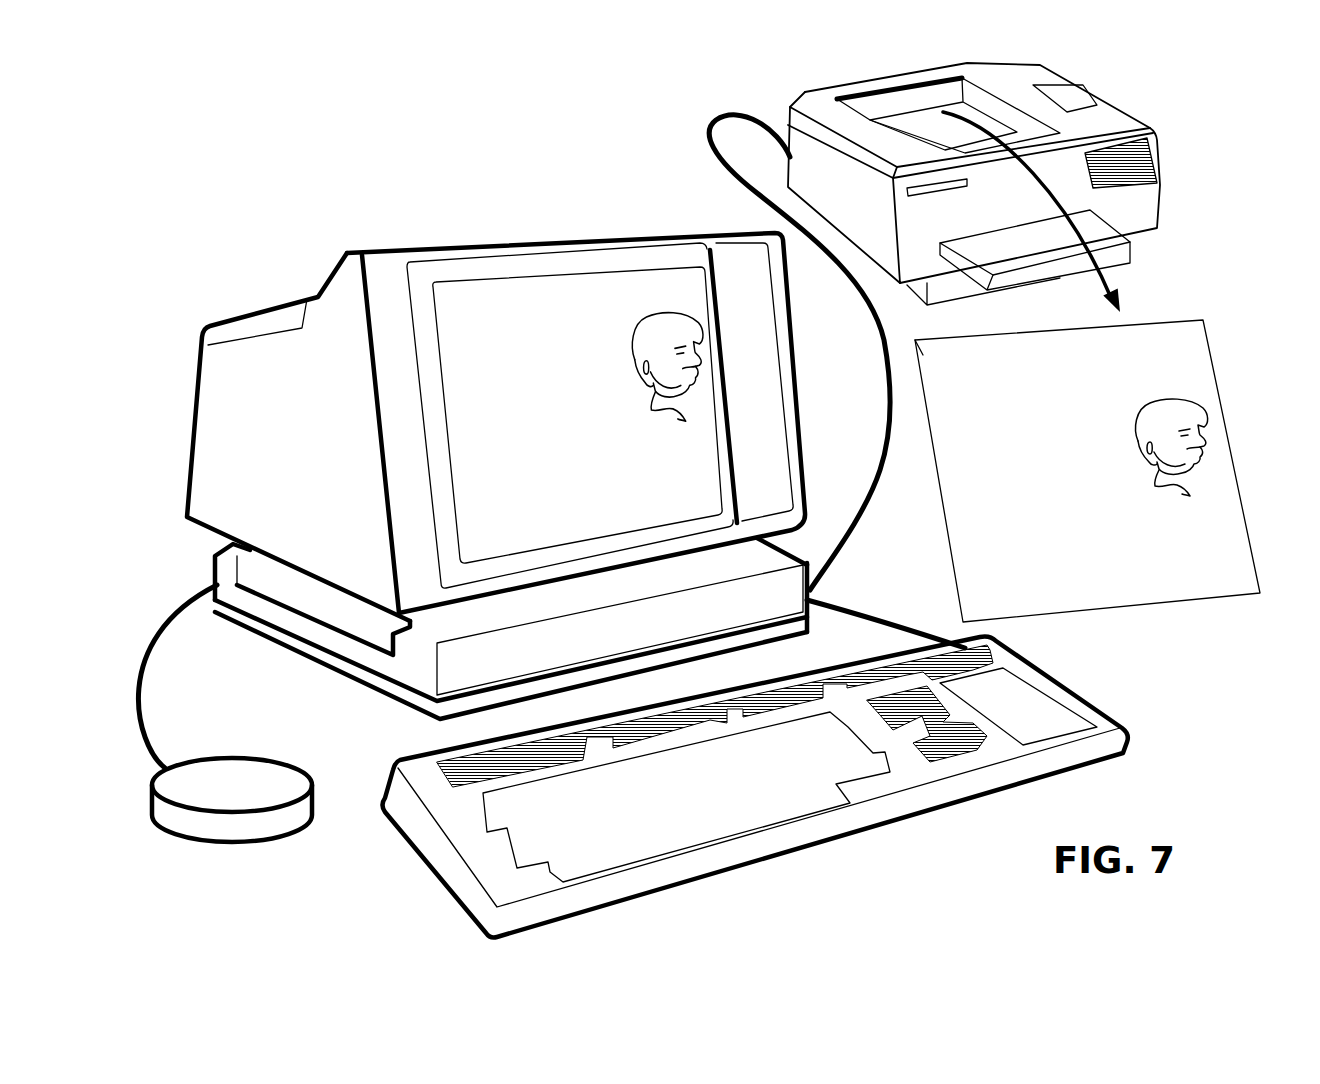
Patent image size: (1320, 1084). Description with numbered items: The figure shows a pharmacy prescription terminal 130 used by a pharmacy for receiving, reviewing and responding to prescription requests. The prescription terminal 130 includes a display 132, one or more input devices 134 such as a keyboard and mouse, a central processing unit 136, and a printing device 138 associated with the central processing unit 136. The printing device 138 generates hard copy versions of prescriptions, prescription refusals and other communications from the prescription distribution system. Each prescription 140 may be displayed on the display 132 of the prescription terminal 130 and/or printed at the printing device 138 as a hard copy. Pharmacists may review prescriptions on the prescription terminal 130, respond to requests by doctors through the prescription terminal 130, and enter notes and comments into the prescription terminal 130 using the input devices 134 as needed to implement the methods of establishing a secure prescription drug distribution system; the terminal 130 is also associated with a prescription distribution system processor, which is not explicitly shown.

The pharmacy prescription terminal 130 is at (438, 157).
The display 132 is at (470, 242).
The input devices 134 is at (443, 862).
The central processing unit 136 is at (353, 663).
The printing device 138 is at (872, 77).
The prescription 140 is at (600, 282).